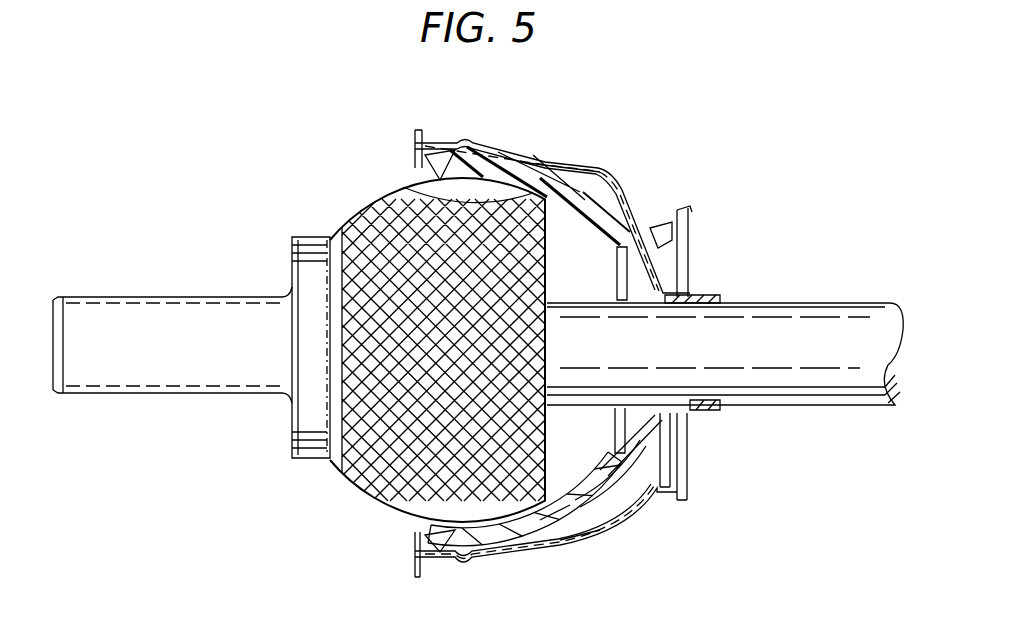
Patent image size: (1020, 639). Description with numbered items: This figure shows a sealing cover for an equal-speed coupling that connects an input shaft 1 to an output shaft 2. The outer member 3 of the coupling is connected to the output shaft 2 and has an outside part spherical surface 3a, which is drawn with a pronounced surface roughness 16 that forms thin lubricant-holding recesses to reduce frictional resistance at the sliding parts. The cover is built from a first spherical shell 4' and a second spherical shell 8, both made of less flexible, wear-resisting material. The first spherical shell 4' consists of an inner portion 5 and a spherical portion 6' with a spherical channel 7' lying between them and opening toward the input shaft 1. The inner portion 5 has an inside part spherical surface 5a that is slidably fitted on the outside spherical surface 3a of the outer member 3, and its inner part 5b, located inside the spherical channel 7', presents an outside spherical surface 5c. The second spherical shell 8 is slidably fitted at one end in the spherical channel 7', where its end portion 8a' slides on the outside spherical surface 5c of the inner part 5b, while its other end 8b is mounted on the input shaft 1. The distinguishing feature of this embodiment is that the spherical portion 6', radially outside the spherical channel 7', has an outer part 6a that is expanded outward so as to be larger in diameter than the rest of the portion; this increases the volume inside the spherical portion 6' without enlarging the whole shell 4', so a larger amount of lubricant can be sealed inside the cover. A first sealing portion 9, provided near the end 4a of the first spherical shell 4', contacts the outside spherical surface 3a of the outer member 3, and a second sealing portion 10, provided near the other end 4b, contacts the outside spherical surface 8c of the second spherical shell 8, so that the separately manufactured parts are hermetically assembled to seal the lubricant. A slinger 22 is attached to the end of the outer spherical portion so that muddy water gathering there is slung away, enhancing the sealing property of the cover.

The input shaft 1 is at (788, 312).
The output shaft 2 is at (110, 312).
The outer member 3 is at (312, 240).
The outside part spherical surface 3a is at (488, 530).
The first spherical shell 4' is at (500, 142).
The end of first spherical shell 4a is at (438, 560).
The other end of first spherical shell 4b is at (682, 502).
The inner portion 5 is at (478, 147).
The inside part spherical surface 5a is at (400, 190).
The inner part 5b is at (628, 490).
The outside spherical surface 5c is at (556, 512).
The spherical portion 6' is at (552, 202).
The outer part 6a is at (608, 540).
The spherical channel 7' is at (560, 137).
The second spherical shell 8 is at (688, 284).
The end portion of second spherical shell 8a' is at (582, 567).
The other end of second spherical shell 8b is at (718, 415).
The outside spherical surface of second spherical shell 8c is at (668, 440).
The first sealing portion 9 is at (420, 170).
The second sealing portion 10 is at (680, 240).
The roughness 16 is at (378, 505).
The slinger 22 is at (668, 212).